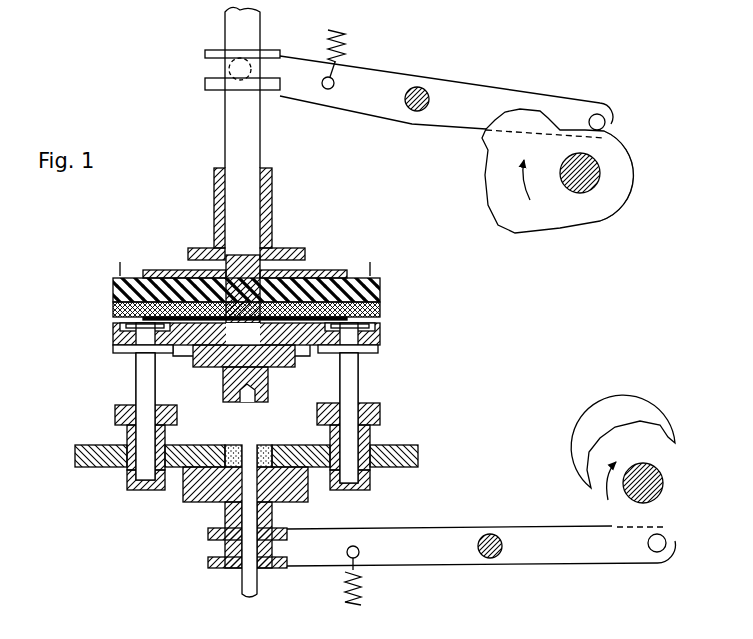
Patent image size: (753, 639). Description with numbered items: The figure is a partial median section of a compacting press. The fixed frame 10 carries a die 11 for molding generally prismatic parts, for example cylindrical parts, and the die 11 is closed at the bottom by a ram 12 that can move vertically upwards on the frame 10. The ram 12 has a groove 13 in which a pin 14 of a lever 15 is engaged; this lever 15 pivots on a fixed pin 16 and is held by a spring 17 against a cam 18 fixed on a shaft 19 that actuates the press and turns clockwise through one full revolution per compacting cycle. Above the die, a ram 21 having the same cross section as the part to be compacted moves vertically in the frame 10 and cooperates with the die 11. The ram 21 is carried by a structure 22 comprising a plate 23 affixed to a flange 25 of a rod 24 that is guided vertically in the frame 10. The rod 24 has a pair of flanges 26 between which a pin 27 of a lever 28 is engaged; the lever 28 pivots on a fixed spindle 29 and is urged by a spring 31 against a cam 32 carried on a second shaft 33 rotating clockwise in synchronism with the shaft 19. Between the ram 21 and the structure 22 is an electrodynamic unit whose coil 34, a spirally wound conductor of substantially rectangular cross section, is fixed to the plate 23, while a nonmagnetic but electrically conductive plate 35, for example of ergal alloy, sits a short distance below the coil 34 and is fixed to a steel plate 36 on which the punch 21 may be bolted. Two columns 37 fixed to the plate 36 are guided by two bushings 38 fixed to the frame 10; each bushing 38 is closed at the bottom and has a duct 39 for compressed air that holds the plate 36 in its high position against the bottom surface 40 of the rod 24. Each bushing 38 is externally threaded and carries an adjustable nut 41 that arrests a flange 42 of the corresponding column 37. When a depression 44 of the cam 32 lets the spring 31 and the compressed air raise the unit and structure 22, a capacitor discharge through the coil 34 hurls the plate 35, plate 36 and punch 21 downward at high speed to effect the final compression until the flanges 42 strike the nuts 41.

The fixed frame 10 is at (265, 193).
The die 11 is at (210, 445).
The ram 12 is at (226, 519).
The groove 13 is at (215, 539).
The pin 14 is at (240, 582).
The lever 15 is at (453, 560).
The fixed pin 16 is at (490, 534).
The spring 17 is at (362, 592).
The cam 18 is at (612, 437).
The shaft 19 is at (660, 476).
The ram 21 is at (262, 385).
The structure 22 is at (167, 262).
The plate 23 is at (357, 278).
The rod 24 is at (225, 117).
The flange 25 is at (322, 270).
The flanges 26 is at (213, 81).
The pin 27 is at (232, 45).
The lever 28 is at (383, 80).
The fixed spindle 29 is at (430, 98).
The spring 31 is at (350, 42).
The cam 32 is at (604, 205).
The cam shaft 33 is at (574, 190).
The coil 34 is at (372, 296).
The plate 35 is at (380, 316).
The steel plate 36 is at (308, 347).
The columns 37 is at (140, 368).
The bushings 38 is at (128, 437).
The duct 39 is at (130, 486).
The bottom surface 40 is at (238, 258).
The nut 41 is at (115, 410).
The flange 42 is at (115, 350).
The depression 44 is at (485, 165).